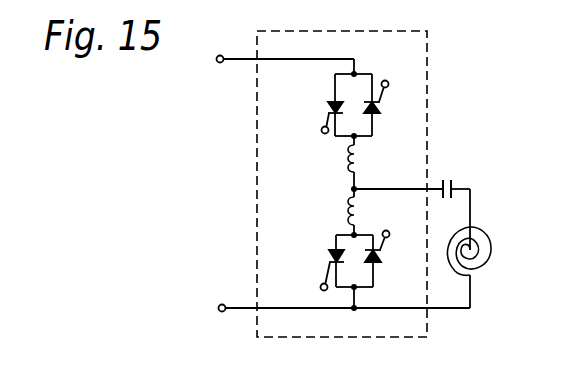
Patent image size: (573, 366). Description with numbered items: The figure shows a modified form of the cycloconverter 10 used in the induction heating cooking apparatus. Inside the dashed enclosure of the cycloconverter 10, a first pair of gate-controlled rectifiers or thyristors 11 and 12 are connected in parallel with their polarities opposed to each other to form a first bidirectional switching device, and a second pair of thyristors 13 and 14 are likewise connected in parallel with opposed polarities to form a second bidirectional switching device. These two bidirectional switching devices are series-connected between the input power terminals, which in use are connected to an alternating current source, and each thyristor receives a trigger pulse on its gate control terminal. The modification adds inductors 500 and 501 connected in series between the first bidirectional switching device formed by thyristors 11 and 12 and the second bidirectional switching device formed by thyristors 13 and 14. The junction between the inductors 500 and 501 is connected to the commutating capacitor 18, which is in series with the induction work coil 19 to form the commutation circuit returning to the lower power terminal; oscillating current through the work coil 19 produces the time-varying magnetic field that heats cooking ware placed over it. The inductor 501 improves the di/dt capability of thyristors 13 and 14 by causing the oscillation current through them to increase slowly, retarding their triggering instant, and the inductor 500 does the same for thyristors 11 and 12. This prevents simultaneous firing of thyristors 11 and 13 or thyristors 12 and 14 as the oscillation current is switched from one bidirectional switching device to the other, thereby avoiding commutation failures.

The cycloconverter 10 is at (345, 31).
The thyristor 11 is at (328, 108).
The thyristor 12 is at (380, 108).
The thyristor 13 is at (328, 258).
The thyristor 14 is at (381, 258).
The inductor 500 is at (360, 160).
The inductor 501 is at (348, 210).
The commutating capacitor 18 is at (446, 180).
The induction work coil 19 is at (496, 250).